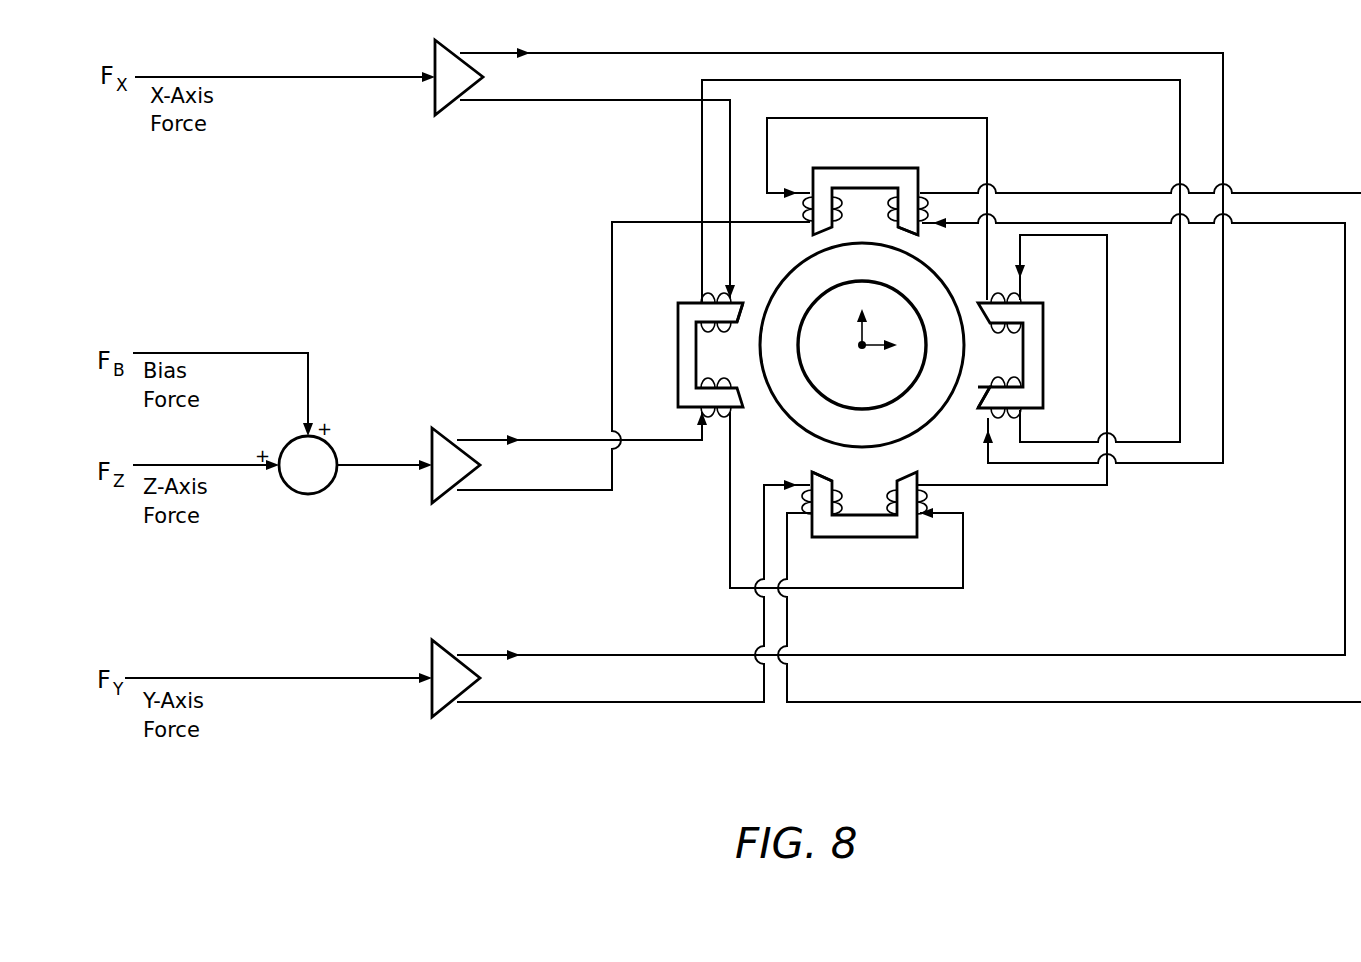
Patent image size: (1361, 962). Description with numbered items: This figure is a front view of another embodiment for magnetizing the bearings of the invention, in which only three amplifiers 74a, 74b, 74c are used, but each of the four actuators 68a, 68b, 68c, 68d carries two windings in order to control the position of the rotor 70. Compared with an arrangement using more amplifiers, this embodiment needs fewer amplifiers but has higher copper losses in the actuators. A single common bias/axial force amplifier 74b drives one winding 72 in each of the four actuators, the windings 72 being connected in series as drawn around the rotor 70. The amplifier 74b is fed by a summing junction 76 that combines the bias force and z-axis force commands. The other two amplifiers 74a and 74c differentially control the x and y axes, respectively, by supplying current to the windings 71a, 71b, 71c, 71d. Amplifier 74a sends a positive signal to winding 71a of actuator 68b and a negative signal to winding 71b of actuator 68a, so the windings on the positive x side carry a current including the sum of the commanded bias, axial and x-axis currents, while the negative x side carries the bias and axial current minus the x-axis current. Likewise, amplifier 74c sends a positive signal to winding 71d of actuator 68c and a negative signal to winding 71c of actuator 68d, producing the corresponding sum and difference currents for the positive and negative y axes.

The actuator 68a is at (678, 358).
The actuator 68b is at (1043, 356).
The actuator 68c is at (871, 168).
The actuator 68d is at (876, 539).
The rotor 70 is at (931, 268).
The winding 71a is at (980, 395).
The winding 71b is at (743, 313).
The winding 71c is at (812, 474).
The winding 71d is at (922, 197).
The winding 72 is at (845, 212).
The amplifier 74a is at (434, 51).
The bias/axial force amplifier 74b is at (431, 439).
The amplifier 74c is at (431, 655).
The summing junction 76 is at (291, 490).